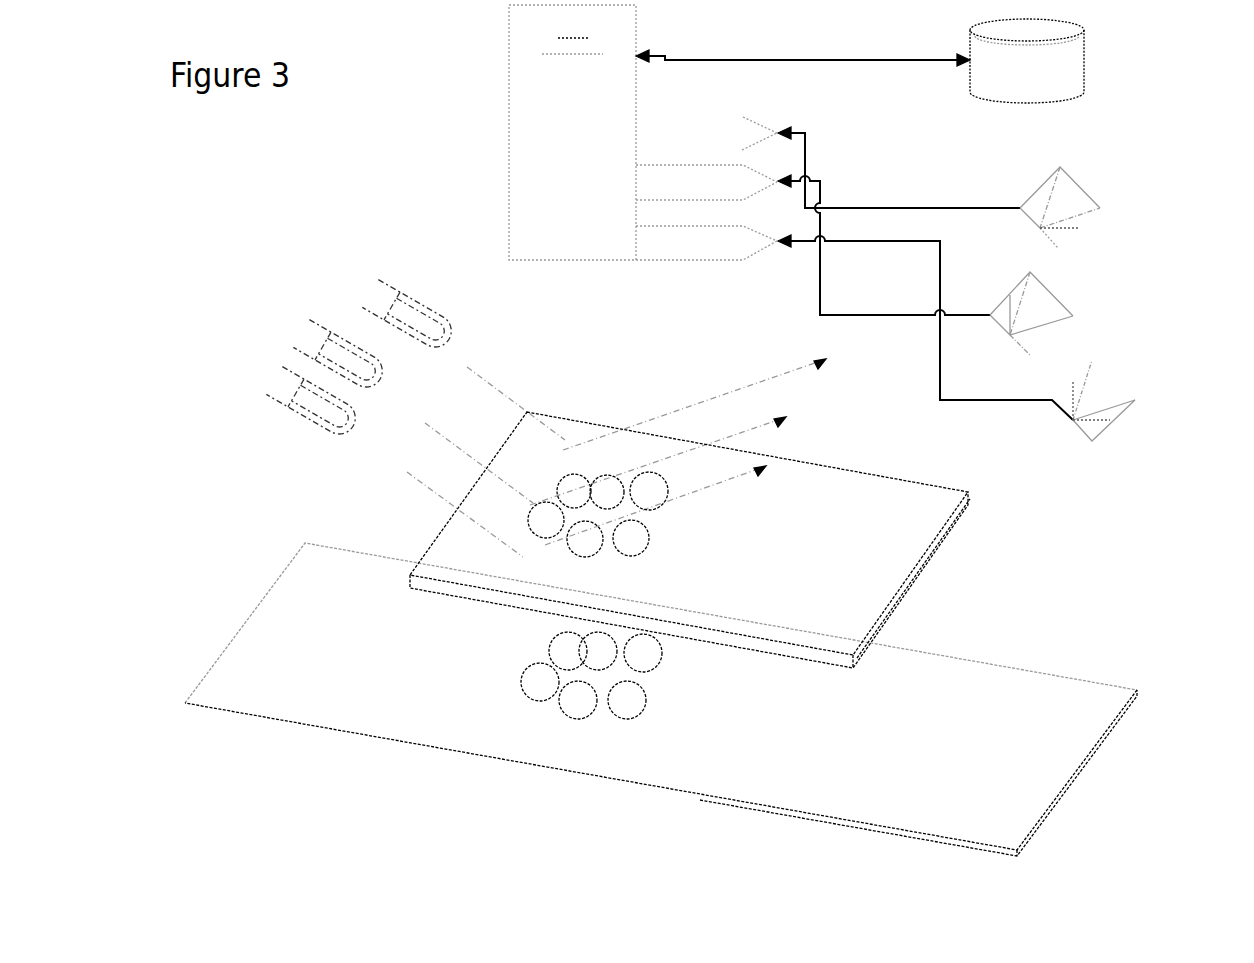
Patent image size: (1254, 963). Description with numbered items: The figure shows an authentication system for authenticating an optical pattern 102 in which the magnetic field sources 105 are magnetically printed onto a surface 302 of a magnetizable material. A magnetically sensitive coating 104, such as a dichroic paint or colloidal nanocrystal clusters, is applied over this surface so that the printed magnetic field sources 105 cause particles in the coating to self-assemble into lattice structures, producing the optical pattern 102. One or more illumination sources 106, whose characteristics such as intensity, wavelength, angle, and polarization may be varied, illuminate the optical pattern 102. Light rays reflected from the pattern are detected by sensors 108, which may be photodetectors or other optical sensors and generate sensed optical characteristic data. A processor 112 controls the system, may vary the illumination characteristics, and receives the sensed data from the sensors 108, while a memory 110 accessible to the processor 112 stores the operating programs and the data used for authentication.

The optical pattern 102 is at (664, 533).
The magnetically sensitive coating 104 is at (828, 597).
The magnetic field sources 105 is at (670, 695).
The illumination sources 106 is at (448, 332).
The sensors 108 is at (1075, 200).
The memory devices 110 is at (1087, 63).
The processor 112 is at (531, 199).
The surface 302 is at (410, 672).